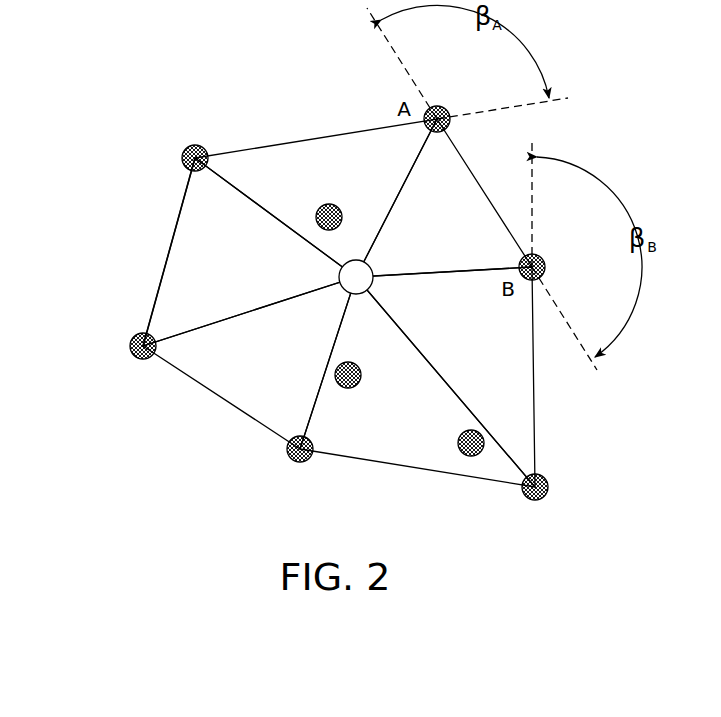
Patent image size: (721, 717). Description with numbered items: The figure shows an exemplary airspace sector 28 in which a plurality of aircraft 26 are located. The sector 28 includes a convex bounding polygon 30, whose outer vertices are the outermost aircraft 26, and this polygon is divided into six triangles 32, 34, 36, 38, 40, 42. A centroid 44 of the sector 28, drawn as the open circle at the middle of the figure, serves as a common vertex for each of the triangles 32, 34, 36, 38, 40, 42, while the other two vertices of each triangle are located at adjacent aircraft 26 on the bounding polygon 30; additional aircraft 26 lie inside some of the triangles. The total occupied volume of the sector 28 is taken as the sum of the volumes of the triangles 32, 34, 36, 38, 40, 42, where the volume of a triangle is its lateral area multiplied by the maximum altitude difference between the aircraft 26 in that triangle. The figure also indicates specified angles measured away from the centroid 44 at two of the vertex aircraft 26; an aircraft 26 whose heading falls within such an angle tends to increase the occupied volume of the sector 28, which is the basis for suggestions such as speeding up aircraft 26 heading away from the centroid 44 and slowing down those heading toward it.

The aircraft 26 is at (192, 146).
The sector 28 is at (92, 472).
The convex bounding polygon 30 is at (165, 238).
The triangle 32 is at (209, 275).
The triangle 34 is at (357, 173).
The triangle 36 is at (439, 218).
The triangle 38 is at (444, 331).
The triangle 40 is at (355, 431).
The triangle 42 is at (245, 365).
The centroid 44 is at (370, 266).